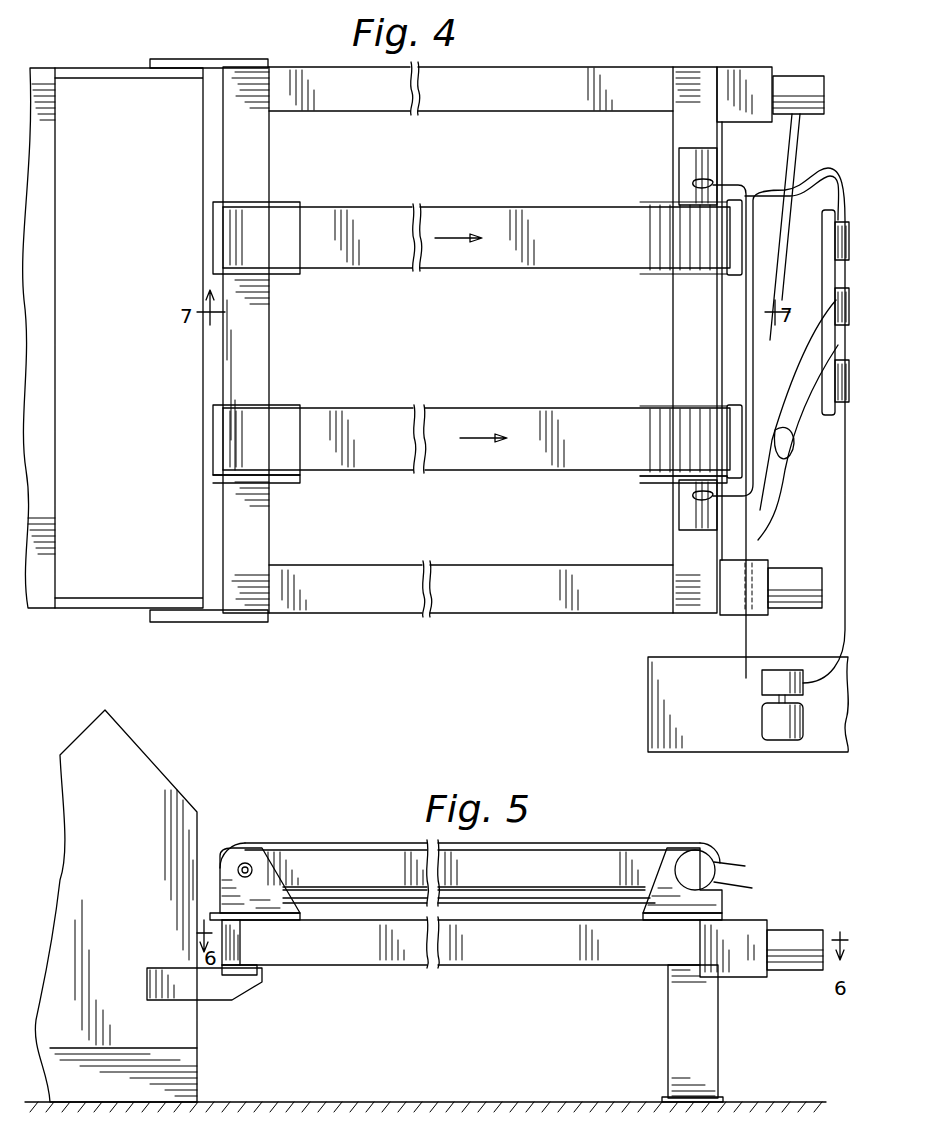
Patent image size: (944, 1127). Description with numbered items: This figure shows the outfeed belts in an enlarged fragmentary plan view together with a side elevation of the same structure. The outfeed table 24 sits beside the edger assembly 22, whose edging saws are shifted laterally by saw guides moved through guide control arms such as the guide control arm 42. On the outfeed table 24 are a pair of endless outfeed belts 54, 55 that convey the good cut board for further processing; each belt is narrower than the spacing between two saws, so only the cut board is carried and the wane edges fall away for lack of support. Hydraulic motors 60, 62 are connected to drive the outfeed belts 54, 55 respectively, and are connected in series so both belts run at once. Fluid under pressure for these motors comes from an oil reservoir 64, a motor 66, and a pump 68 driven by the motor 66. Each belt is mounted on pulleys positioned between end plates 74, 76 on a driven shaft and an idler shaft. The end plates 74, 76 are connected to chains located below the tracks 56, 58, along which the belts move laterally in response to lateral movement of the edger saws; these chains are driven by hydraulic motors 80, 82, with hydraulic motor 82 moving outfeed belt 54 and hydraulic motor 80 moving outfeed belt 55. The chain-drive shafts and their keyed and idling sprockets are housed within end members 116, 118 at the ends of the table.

In FIG. 5, the edger assembly 22 is at (128, 768).
In FIG. 5, the outfeed table 24 is at (504, 999).
In FIG. 5, the guide control arm 42 is at (240, 878).
In FIG. 4, the outfeed belt 54 is at (540, 216).
In FIG. 4, the outfeed belt 55 is at (518, 418).
In FIG. 5, the outfeed belt 55 is at (506, 845).
In FIG. 4, the track 56 is at (262, 316).
In FIG. 5, the track 56 is at (283, 920).
In FIG. 5, the track 58 is at (656, 920).
In FIG. 4, the hydraulic motor 60 is at (696, 150).
In FIG. 4, the hydraulic motor 62 is at (694, 520).
In FIG. 5, the hydraulic motor 62 is at (698, 868).
In FIG. 4, the oil reservoir 64 is at (712, 745).
In FIG. 4, the motor 66 is at (760, 727).
In FIG. 4, the pump 68 is at (753, 687).
In FIG. 4, the end plate 74 is at (660, 204).
In FIG. 5, the end plate 74 is at (668, 848).
In FIG. 4, the end plate 76 is at (284, 208).
In FIG. 5, the end plate 76 is at (257, 860).
In FIG. 4, the hydraulic motor 80 is at (786, 608).
In FIG. 5, the hydraulic motor 80 is at (805, 970).
In FIG. 4, the hydraulic motor 82 is at (810, 113).
In FIG. 4, the end member 116 is at (550, 66).
In FIG. 4, the end member 118 is at (483, 620).
In FIG. 5, the end member 118 is at (363, 952).